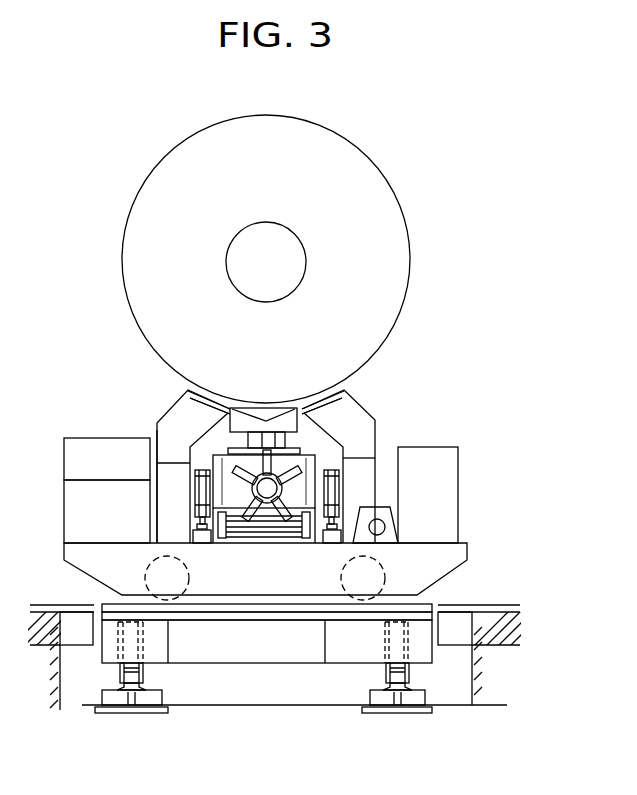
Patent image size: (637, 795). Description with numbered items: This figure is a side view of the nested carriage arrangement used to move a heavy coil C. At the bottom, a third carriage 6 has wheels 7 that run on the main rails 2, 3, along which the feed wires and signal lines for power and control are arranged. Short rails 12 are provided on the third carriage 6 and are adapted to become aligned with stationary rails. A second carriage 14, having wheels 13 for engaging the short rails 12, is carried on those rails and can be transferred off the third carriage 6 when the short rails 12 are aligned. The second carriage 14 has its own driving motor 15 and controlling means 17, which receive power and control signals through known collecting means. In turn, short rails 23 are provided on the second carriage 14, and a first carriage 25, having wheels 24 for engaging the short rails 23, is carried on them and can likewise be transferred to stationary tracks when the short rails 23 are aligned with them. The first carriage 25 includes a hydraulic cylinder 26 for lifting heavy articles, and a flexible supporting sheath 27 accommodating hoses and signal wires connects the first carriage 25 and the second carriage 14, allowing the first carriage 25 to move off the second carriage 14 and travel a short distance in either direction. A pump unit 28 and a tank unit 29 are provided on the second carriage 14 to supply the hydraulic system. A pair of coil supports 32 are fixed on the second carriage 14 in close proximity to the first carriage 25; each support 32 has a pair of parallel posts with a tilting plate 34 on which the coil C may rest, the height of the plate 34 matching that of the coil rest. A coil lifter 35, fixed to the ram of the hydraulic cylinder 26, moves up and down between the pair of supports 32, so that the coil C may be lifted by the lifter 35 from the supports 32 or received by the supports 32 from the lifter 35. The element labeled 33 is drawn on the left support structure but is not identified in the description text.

The coil C is at (413, 258).
The coil support 32 is at (170, 404).
The support arm 33 is at (157, 430).
The tilting plate 34 is at (207, 394).
The coil lifter 35 is at (293, 407).
The hydraulic cylinder 26 is at (262, 432).
The first carriage 25 is at (221, 450).
The wheels 24 is at (330, 462).
The short rails 23 is at (320, 524).
The flexible supporting sheath 27 is at (241, 540).
The driving motor 15 is at (383, 505).
The controlling means 17 is at (436, 452).
The pump unit 28 is at (70, 468).
The tank unit 29 is at (70, 522).
The second carriage 14 is at (472, 550).
The wheels 13 is at (145, 578).
The short rails 12 is at (430, 604).
The third carriage 6 is at (228, 668).
The wheels 7 is at (143, 650).
The rail 2 is at (120, 690).
The rail 3 is at (263, 701).